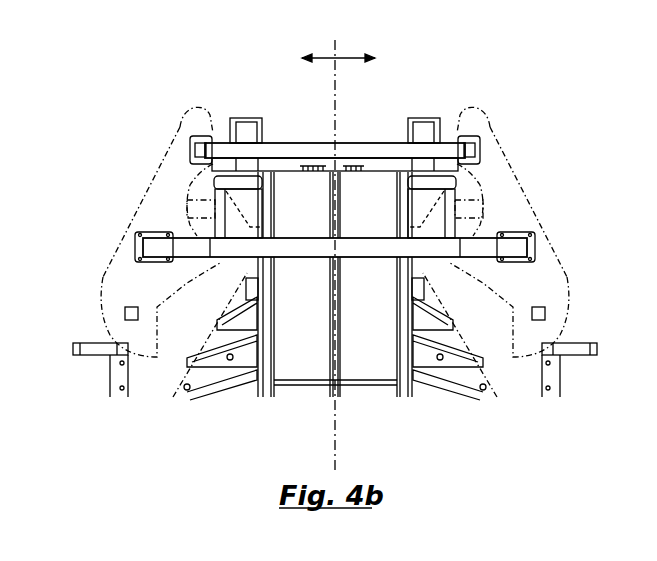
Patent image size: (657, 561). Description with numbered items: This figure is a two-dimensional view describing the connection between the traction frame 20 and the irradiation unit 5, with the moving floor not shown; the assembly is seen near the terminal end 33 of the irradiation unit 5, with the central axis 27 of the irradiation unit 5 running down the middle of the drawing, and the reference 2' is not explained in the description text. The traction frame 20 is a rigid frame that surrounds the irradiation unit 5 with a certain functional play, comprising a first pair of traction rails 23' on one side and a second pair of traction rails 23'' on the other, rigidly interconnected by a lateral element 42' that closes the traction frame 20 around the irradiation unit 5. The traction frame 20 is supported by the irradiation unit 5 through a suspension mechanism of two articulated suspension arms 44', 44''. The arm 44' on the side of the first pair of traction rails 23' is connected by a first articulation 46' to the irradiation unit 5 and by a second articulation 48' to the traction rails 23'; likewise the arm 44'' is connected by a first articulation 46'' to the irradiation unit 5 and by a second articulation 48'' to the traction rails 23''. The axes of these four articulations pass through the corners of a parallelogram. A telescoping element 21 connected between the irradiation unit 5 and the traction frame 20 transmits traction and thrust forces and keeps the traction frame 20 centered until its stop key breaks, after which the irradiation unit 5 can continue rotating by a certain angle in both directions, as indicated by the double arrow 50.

The column assembly 2' is at (8, 32).
The irradiation unit 5 is at (378, 343).
The traction frame 20 is at (487, 250).
The telescoping element 21 is at (223, 263).
The first pair of traction rails 23' is at (116, 184).
The second pair of traction rails 23'' is at (557, 184).
The central axis 27 is at (337, 405).
The terminal end 33 is at (400, 90).
The lateral element 42' is at (335, 145).
The articulated suspension arm 44' is at (141, 213).
The articulated suspension arm 44'' is at (532, 213).
The first articulation 46' is at (141, 166).
The first articulation 46'' is at (532, 168).
The second articulation 48' is at (138, 331).
The second articulation 48'' is at (535, 331).
The double arrow 50 is at (355, 58).